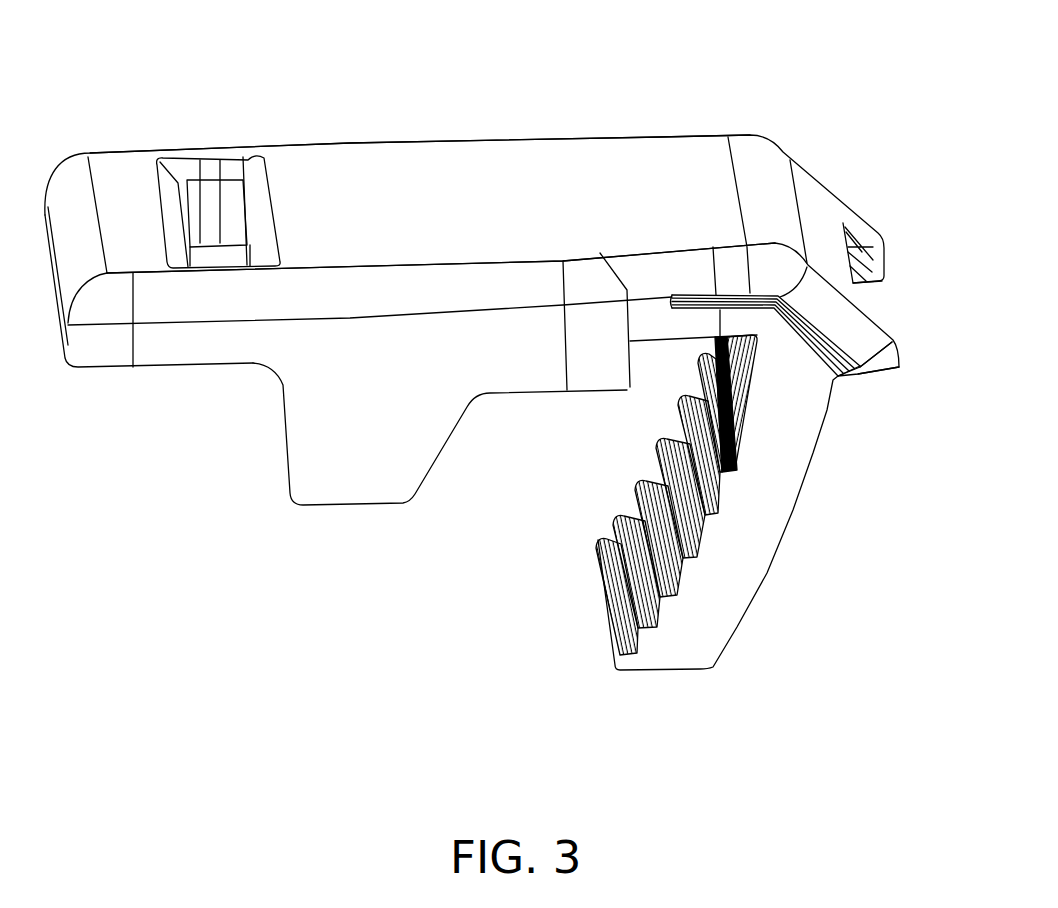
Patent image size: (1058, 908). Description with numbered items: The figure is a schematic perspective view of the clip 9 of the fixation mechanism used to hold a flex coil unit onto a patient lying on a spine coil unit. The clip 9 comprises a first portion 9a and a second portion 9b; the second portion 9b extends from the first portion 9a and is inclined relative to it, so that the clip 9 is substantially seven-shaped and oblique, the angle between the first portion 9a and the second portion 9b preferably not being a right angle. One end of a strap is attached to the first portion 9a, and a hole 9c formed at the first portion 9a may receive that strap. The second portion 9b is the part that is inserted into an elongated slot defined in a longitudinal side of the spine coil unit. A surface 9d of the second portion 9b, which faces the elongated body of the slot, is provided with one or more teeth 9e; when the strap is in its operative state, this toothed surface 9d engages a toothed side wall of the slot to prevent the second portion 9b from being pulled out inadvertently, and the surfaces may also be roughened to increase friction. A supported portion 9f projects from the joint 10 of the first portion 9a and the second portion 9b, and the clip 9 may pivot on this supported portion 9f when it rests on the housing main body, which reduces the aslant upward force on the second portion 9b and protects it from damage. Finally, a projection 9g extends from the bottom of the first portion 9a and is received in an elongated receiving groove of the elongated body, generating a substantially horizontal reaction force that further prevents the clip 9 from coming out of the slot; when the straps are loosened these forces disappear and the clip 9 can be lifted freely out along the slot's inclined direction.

The clip 9 is at (832, 137).
The first portion 9a is at (468, 188).
The second portion 9b is at (738, 562).
The hole 9c is at (210, 218).
The surface 9d is at (677, 570).
The teeth 9e is at (627, 537).
The supported portion 9f is at (875, 380).
The projection 9g is at (308, 460).
The joint 10 is at (848, 328).